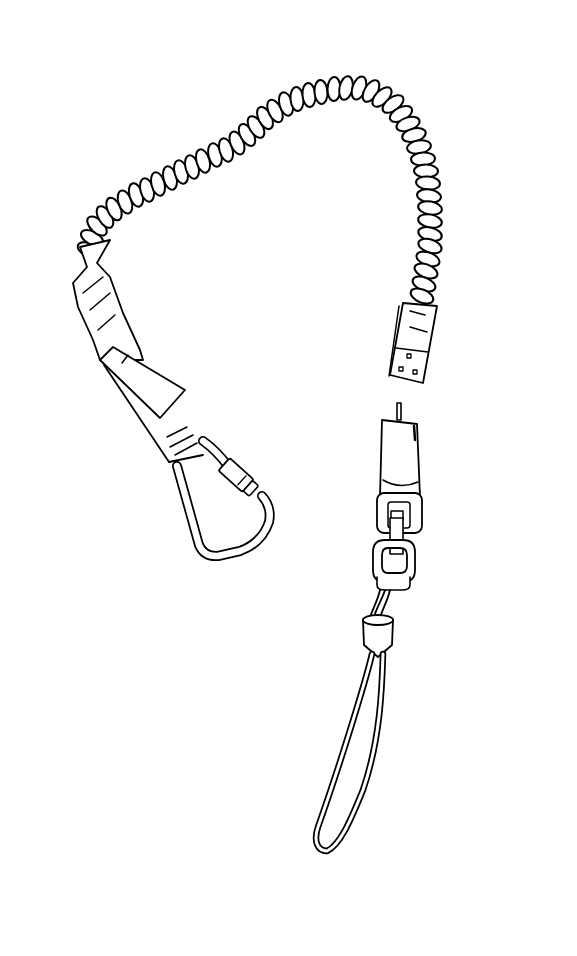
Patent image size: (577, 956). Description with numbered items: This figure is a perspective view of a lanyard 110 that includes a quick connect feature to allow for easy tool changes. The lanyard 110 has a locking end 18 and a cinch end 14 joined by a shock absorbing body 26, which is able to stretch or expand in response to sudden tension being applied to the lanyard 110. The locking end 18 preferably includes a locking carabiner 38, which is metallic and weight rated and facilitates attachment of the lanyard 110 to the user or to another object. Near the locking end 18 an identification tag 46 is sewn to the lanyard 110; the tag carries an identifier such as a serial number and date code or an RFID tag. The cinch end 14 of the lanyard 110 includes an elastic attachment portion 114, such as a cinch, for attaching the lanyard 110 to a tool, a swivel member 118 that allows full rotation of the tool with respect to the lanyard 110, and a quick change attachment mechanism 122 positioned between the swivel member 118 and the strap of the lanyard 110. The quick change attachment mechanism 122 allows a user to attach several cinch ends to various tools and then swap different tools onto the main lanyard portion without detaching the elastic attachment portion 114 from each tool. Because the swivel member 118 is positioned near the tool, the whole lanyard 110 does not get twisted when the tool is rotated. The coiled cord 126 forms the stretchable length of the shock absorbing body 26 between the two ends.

The lanyard 110 is at (486, 88).
The coiled cord 126 is at (297, 88).
The shock absorbing body 26 is at (72, 190).
The quick change attachment mechanism 122 is at (446, 383).
The locking end 18 is at (191, 622).
The identification tag 46 is at (137, 407).
The locking carabiner 38 is at (180, 523).
The cinch end 14 is at (438, 728).
The swivel member 118 is at (420, 540).
The elastic attachment portion 114 is at (325, 764).